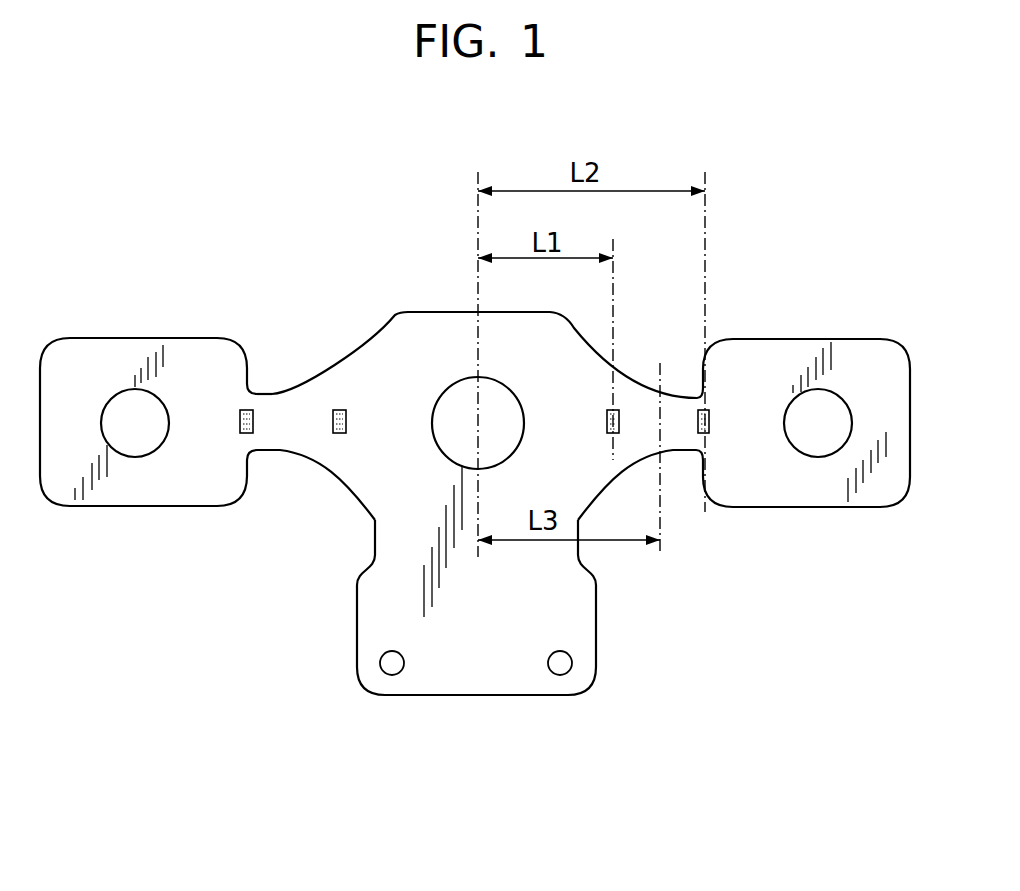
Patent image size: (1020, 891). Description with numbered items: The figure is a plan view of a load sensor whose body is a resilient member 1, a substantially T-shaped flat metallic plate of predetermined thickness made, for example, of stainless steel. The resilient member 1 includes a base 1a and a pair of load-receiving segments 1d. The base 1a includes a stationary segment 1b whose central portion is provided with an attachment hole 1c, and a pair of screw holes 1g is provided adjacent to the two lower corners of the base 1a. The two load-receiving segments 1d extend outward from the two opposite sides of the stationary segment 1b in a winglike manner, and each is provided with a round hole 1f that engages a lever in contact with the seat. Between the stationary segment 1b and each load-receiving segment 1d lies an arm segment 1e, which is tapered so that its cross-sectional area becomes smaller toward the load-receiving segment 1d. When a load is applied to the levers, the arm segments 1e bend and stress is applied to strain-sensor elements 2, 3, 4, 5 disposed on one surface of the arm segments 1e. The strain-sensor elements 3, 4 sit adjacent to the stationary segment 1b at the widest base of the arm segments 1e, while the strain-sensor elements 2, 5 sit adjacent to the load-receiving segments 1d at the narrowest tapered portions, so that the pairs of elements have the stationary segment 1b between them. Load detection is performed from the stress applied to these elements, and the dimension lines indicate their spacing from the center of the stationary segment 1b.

The resilient member 1 is at (443, 699).
The base 1a is at (513, 672).
The stationary segment 1b is at (400, 345).
The attachment hole 1c is at (468, 405).
The load-receiving segment 1d is at (140, 353).
The arm segment 1e is at (300, 407).
The round hole 1f is at (138, 432).
The screw hole 1g is at (392, 670).
The strain-sensor element 2 is at (240, 432).
The strain-sensor element 3 is at (339, 433).
The strain-sensor element 4 is at (619, 423).
The strain-sensor element 5 is at (709, 420).